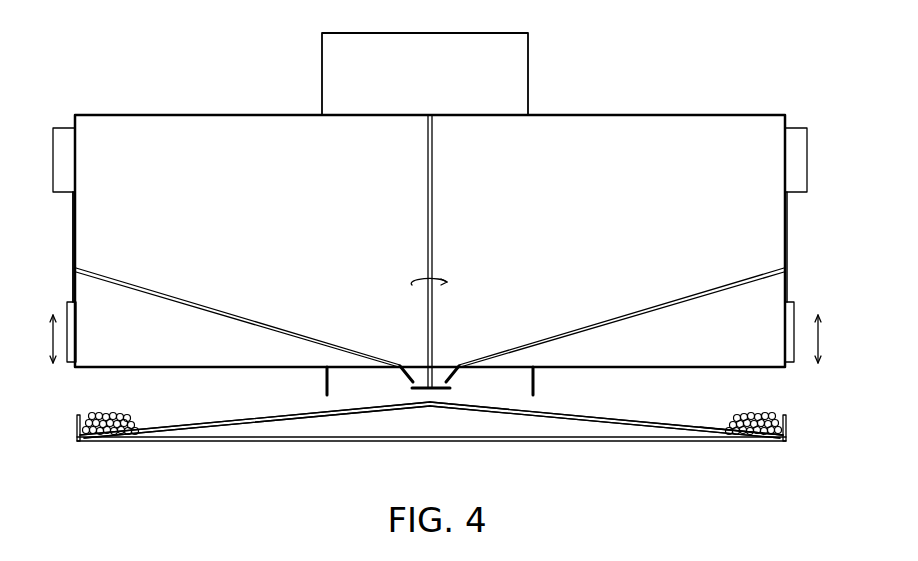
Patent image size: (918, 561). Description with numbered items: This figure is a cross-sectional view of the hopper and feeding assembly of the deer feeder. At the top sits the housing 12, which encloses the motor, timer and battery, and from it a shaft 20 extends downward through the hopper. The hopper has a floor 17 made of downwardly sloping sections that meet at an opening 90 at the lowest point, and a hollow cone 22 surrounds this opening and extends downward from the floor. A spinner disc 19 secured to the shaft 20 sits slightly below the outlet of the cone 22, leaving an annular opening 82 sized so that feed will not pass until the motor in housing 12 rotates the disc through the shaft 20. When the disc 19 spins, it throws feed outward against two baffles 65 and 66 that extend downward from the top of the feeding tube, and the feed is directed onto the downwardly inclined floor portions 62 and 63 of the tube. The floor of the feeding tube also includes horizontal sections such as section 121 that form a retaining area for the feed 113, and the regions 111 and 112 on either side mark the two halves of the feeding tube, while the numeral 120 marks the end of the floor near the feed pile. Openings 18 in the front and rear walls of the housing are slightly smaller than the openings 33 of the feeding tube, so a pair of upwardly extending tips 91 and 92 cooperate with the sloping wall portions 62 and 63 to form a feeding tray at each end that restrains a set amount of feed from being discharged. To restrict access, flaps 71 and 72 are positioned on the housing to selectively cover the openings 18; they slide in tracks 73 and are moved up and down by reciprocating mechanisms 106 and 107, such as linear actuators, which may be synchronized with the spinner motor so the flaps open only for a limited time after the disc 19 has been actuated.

The housing 12 is at (529, 73).
The shaft 20 is at (434, 218).
The reciprocating mechanism 106 is at (62, 128).
The reciprocating mechanism 107 is at (797, 128).
The tracks 73 is at (72, 213).
The flap 72 is at (67, 308).
The flap 71 is at (796, 324).
The floor 17 is at (207, 302).
The hollow cone 22 is at (404, 378).
The opening 90 is at (442, 368).
The annular opening 82 is at (452, 390).
The baffle 65 is at (325, 389).
The baffle 66 is at (538, 373).
The spinner disc 19 is at (427, 392).
The downwardly inclined floor portion 62 is at (245, 421).
The downwardly inclined floor portion 63 is at (605, 421).
The right deflector end 120 is at (733, 435).
The openings of the feeding tube 33 is at (518, 441).
The upwardly extending tip 91 is at (77, 419).
The upwardly extending tip 92 is at (786, 422).
The horizontal section 121 is at (115, 434).
The feed 113 is at (747, 429).
The left chamber 111 is at (178, 405).
The right chamber 112 is at (665, 405).
The openings 18 is at (75, 392).